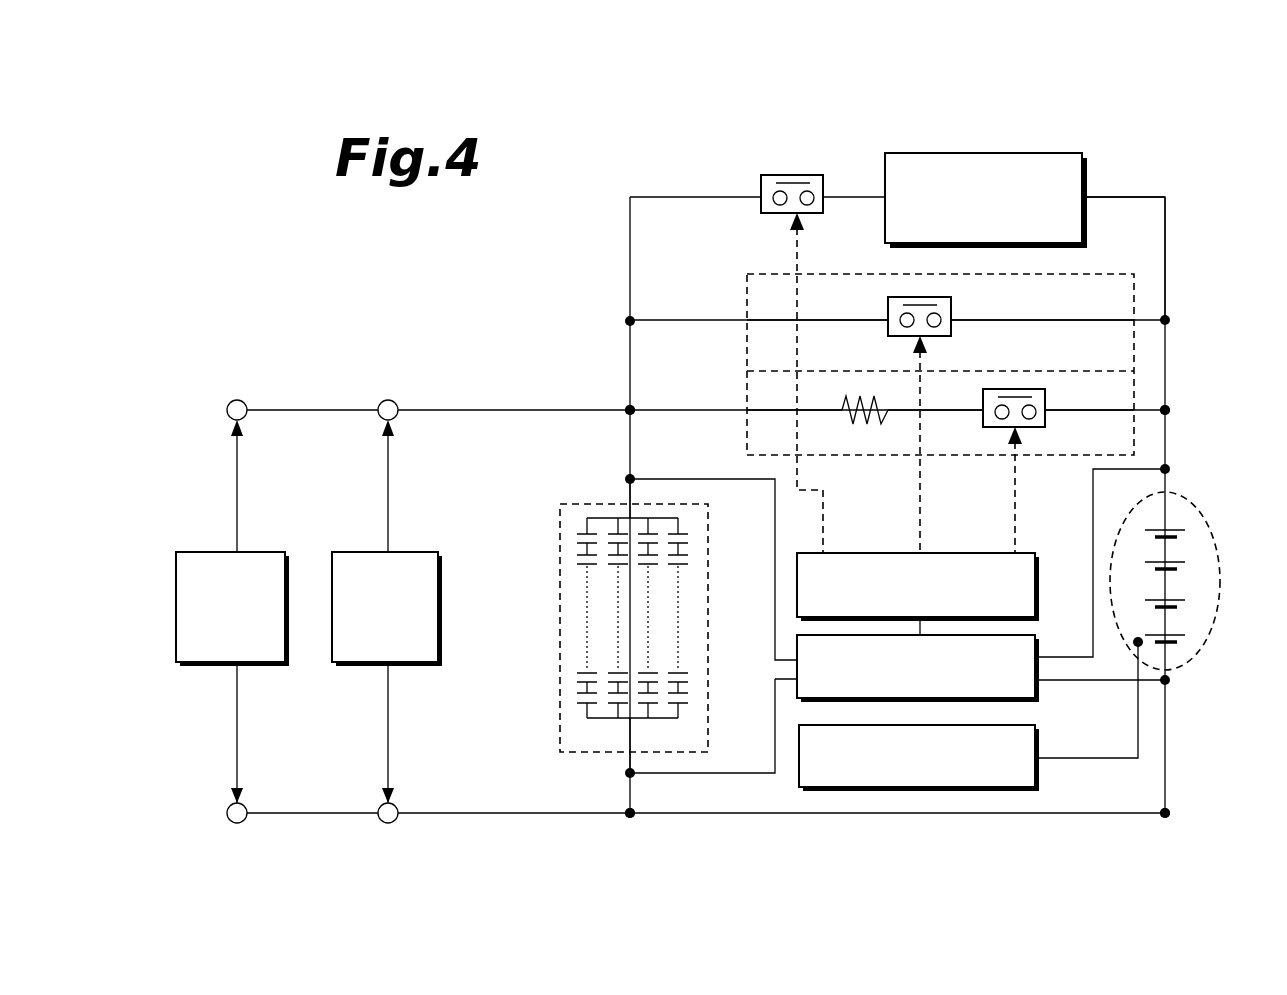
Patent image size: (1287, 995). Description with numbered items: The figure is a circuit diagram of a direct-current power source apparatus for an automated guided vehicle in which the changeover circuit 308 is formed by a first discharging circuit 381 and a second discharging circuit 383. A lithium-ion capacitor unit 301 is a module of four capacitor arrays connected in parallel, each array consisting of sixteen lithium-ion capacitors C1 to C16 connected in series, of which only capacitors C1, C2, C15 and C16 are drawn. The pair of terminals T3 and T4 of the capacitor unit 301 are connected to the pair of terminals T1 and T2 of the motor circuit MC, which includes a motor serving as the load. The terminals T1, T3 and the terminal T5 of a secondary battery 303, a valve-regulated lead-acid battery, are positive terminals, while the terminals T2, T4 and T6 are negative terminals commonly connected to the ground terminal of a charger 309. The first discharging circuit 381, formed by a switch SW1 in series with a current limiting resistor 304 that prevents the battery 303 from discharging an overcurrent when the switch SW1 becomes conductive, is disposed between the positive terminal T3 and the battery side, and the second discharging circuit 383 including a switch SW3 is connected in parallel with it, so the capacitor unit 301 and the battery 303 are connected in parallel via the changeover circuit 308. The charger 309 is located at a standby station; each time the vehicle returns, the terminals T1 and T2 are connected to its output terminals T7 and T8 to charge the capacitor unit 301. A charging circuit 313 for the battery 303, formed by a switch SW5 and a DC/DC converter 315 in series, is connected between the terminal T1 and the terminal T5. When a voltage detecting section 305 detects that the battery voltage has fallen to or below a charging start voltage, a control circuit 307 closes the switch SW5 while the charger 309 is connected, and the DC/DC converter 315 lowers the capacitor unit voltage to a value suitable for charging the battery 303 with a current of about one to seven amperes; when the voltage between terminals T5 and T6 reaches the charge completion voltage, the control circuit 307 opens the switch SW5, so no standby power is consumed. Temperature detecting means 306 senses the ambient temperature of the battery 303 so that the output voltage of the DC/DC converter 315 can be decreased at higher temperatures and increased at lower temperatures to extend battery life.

The lithium-ion capacitor unit 301 is at (604, 610).
The secondary battery 303 is at (1195, 662).
The current limiting resistor 304 is at (852, 430).
The voltage detecting section 305 is at (1038, 644).
The temperature detecting means 306 is at (1038, 738).
The control circuit 307 is at (946, 552).
The changeover circuit 308 is at (998, 393).
The charger 309 is at (255, 550).
The charging circuit 313 is at (1104, 196).
The DC/DC converter 315 is at (1000, 152).
The first discharging circuit 381 is at (1134, 440).
The second discharging circuit 383 is at (1134, 297).
The motor circuit MC is at (408, 550).
The switch SW1 is at (1046, 398).
The switch SW3 is at (952, 310).
The switch SW5 is at (775, 173).
The lithium-ion capacitor C1 is at (574, 532).
The lithium-ion capacitor C2 is at (576, 559).
The lithium-ion capacitor C15 is at (576, 676).
The lithium-ion capacitor C16 is at (594, 706).
The terminal T1 is at (388, 399).
The terminal T2 is at (388, 824).
The terminal T3 is at (624, 406).
The terminal T4 is at (630, 819).
The terminal T5 is at (1172, 410).
The terminal T6 is at (1172, 813).
The output terminal T7 is at (237, 399).
The output terminal T8 is at (237, 824).